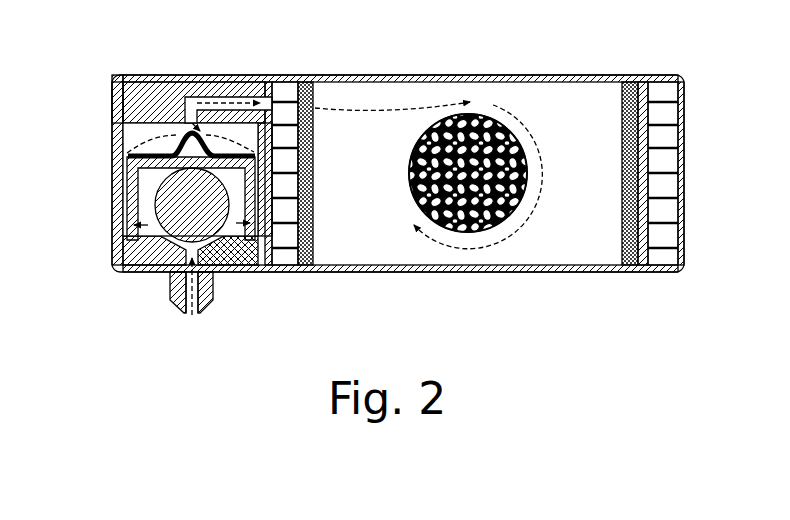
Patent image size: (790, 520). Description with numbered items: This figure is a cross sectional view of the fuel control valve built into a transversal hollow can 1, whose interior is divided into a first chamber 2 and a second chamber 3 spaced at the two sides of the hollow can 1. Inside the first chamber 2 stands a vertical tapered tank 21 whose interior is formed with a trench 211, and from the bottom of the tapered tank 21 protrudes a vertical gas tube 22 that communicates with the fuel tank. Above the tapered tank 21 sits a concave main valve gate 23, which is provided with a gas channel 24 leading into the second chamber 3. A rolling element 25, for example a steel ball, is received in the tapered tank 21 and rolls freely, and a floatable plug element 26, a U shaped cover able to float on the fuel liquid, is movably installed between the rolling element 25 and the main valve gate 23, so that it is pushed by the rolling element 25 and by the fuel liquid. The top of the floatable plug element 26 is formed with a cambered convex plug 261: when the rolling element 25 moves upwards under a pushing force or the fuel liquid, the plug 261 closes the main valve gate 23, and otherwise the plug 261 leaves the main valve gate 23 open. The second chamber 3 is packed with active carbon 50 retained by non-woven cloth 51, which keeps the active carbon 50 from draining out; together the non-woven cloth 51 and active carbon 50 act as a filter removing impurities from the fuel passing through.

The transversal hollow can 1 is at (486, 78).
The first chamber 2 is at (140, 137).
The tapered tank 21 is at (224, 272).
The trench 211 is at (259, 272).
The gas tube 22 is at (178, 303).
The main valve gate 23 is at (190, 125).
The gas channel 24 is at (226, 97).
The rolling element 25 is at (160, 203).
The floatable plug element 26 is at (132, 172).
The plug 261 is at (112, 86).
The second chamber 3 is at (555, 250).
The active carbon 50 is at (503, 222).
The non-woven cloth 51 is at (622, 252).